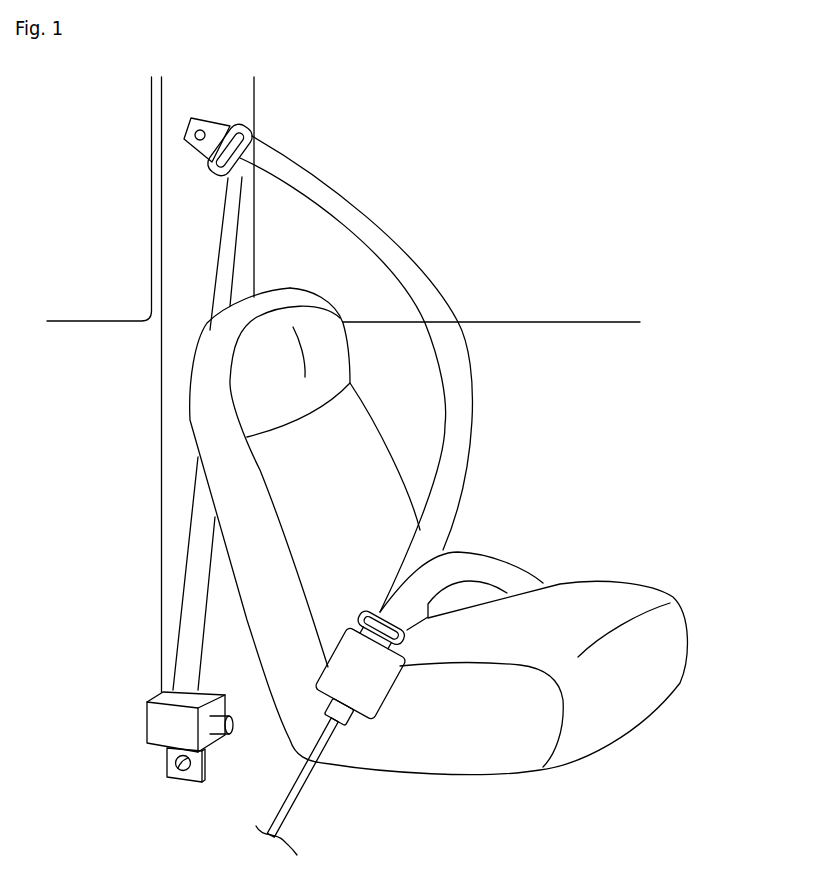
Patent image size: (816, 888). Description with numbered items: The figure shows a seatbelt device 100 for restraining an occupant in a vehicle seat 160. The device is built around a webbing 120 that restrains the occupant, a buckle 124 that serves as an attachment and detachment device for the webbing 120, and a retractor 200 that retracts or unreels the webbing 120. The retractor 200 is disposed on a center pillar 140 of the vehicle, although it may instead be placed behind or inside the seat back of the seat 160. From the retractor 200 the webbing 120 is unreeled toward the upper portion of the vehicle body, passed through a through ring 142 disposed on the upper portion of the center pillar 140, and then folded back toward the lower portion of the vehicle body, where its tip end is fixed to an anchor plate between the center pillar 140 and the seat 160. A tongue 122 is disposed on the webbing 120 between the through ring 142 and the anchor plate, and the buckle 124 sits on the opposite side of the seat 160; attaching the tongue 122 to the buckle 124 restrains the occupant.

The seatbelt device 100 is at (440, 129).
The webbing 120 is at (414, 265).
The tongue 122 is at (408, 638).
The buckle 124 is at (372, 687).
The center pillar 140 is at (199, 126).
The through ring 142 is at (258, 130).
The seat 160 is at (634, 592).
The retractor 200 is at (155, 721).